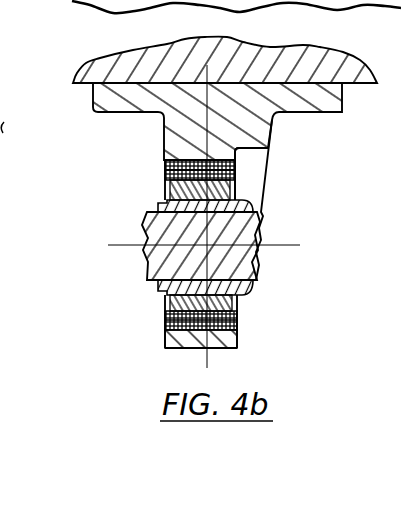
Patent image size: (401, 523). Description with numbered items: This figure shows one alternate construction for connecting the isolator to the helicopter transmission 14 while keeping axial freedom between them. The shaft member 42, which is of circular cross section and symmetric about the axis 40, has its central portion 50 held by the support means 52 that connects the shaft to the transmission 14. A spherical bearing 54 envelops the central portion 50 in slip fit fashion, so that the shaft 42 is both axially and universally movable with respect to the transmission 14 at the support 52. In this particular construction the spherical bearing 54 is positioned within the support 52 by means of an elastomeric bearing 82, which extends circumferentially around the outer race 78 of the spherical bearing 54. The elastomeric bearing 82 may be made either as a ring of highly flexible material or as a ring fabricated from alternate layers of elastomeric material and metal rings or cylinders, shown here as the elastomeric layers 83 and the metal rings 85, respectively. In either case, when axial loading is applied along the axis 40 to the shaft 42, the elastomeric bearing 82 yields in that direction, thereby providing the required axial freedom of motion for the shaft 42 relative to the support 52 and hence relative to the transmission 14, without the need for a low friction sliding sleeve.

The transmission 14 is at (229, 62).
The support means 52 is at (322, 103).
The shaft member 42 is at (263, 227).
The spherical bearing 54 is at (233, 198).
The elastomeric material layer 83 is at (165, 161).
The metal ring 85 is at (165, 172).
The central portion 50 is at (145, 227).
The axis 40 is at (120, 247).
The outer race 78 is at (168, 305).
The elastomeric bearing 82 is at (240, 325).